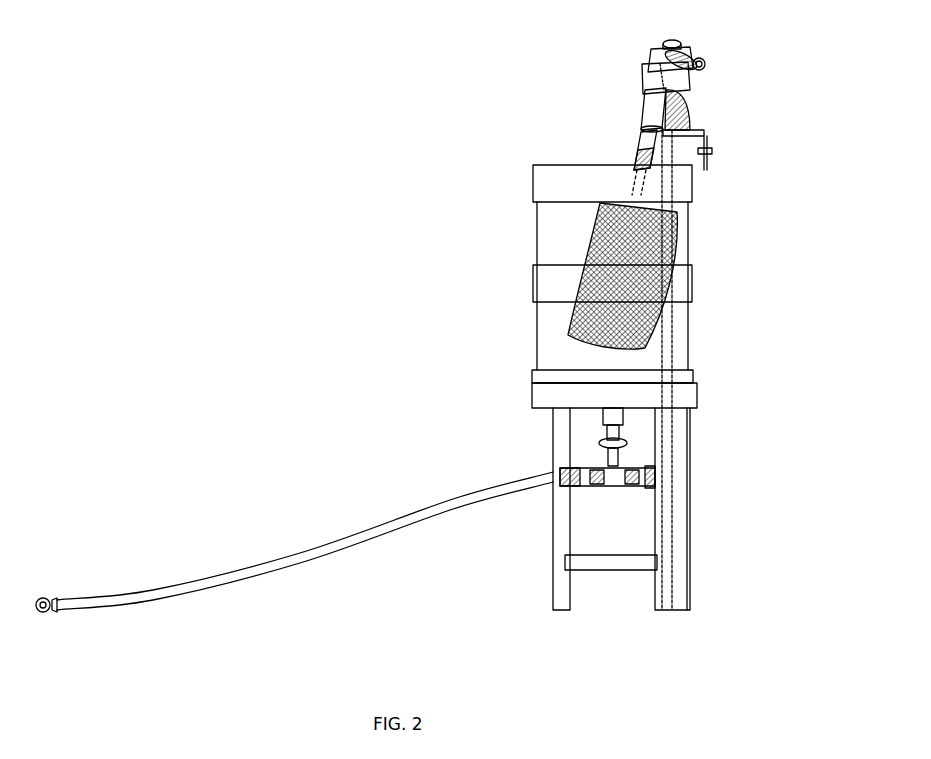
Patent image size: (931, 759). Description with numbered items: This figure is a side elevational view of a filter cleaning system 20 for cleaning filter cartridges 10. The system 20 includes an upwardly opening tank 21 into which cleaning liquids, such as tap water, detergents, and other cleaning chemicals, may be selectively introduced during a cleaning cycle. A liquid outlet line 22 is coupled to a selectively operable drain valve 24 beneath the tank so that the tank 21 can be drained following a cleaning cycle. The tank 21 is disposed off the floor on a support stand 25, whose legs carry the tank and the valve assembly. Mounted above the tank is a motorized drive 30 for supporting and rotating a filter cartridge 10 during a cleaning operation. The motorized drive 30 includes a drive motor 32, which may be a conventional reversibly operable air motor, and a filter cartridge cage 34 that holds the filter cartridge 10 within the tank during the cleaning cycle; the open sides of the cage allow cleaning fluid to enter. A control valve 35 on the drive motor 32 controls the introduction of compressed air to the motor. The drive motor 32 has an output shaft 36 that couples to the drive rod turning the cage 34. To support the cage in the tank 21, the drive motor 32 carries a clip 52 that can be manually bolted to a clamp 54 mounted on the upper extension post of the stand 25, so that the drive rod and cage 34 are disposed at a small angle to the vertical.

The filter cartridge 10 is at (655, 330).
The filter cleaning system 20 is at (700, 282).
The tank 21 is at (536, 243).
The liquid outlet line 22 is at (477, 500).
The drain valve 24 is at (605, 490).
The support stand 25 is at (690, 478).
The motorized drive 30 is at (640, 106).
The drive motor 32 is at (690, 78).
The filter cartridge cage 34 is at (587, 238).
The control valve 35 is at (701, 60).
The output shaft 36 is at (645, 137).
The clip 52 is at (690, 107).
The clamp 54 is at (702, 135).